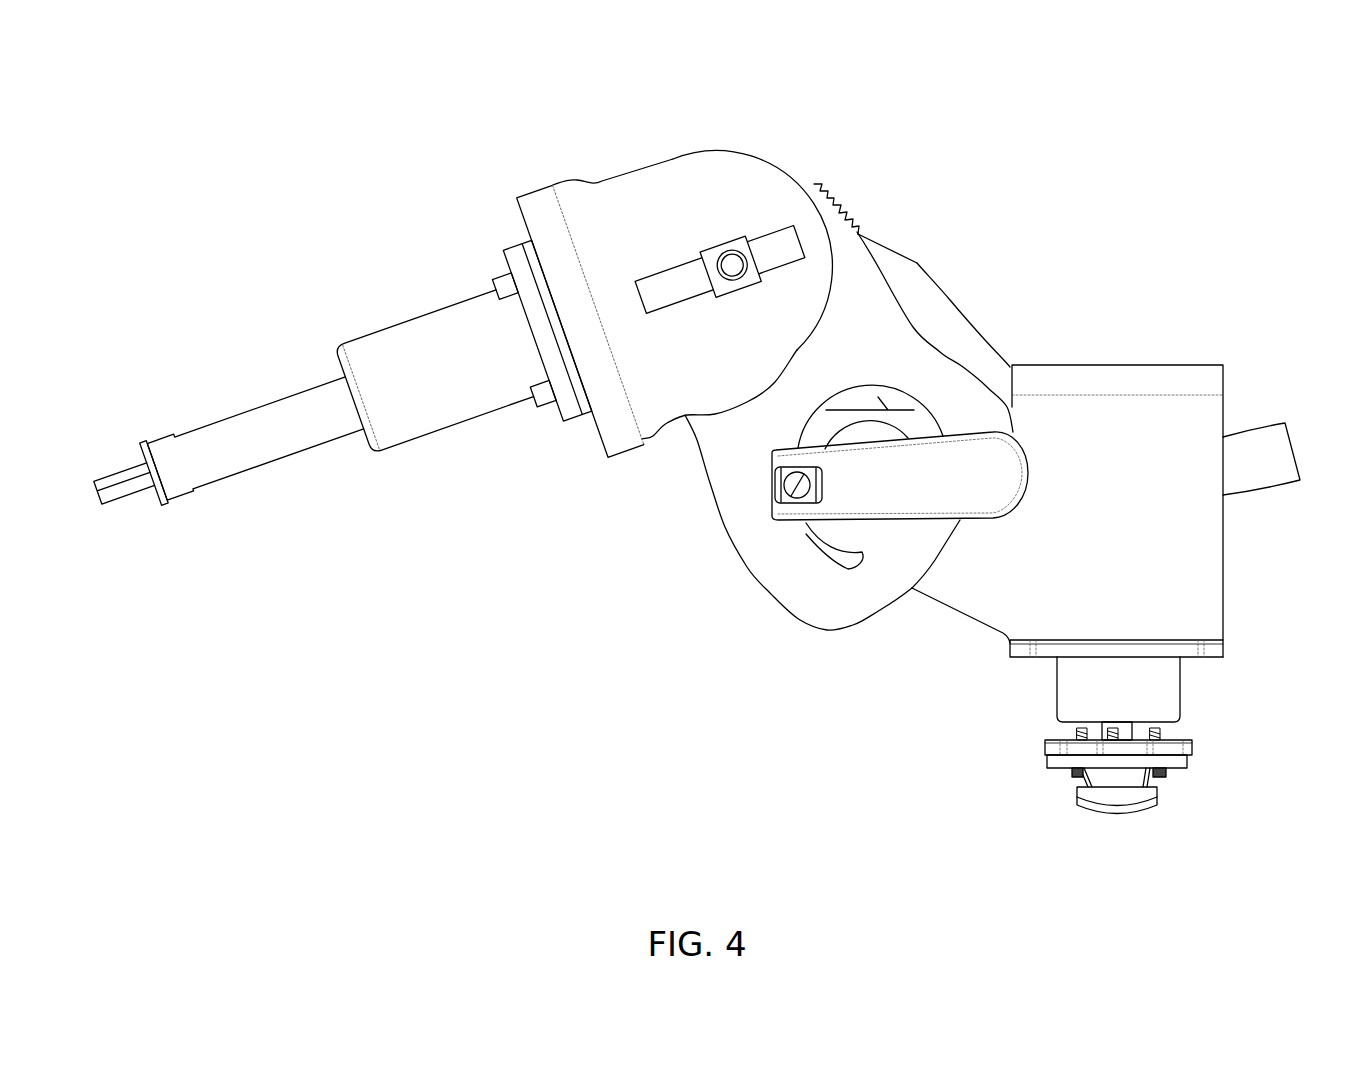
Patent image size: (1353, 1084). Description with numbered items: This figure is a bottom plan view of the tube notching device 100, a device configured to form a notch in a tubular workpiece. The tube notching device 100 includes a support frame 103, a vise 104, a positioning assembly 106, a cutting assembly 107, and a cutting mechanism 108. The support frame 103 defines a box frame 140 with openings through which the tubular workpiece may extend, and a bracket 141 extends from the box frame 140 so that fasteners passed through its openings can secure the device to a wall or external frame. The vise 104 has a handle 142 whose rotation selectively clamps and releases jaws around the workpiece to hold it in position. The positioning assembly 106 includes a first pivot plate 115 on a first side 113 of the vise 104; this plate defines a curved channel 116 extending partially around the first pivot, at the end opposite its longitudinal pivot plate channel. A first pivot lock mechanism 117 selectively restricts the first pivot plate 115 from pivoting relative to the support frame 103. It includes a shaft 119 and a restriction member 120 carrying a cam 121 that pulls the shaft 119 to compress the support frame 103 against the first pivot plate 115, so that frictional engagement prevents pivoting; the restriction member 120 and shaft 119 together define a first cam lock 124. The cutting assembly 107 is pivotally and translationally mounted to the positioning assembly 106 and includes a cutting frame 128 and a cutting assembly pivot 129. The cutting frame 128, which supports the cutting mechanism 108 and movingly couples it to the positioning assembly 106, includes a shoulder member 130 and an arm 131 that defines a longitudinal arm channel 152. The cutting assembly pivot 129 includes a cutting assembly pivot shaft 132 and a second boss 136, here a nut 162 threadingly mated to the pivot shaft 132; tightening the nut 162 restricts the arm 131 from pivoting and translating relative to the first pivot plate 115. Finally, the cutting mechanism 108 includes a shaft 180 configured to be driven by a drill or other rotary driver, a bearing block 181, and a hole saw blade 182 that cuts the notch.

The tube notching device 100 is at (490, 100).
The support frame 103 is at (1180, 326).
The vise 104 is at (1245, 733).
The positioning assembly 106 is at (700, 516).
The cutting assembly 107 is at (738, 127).
The cutting mechanism 108 is at (320, 306).
The first side 113 is at (752, 618).
The first pivot plate 115 is at (837, 612).
The curved channel 116 is at (860, 549).
The first pivot lock mechanism 117 is at (775, 528).
The shaft 119 is at (770, 488).
The restriction member 120 is at (998, 495).
The cam 121 is at (968, 537).
The first cam lock 124 is at (797, 447).
The cutting frame 128 is at (613, 148).
The cutting assembly pivot 129 is at (702, 240).
The shoulder member 130 is at (528, 197).
The arm 131 is at (673, 172).
The cutting assembly pivot shaft 132 is at (735, 278).
The second boss 136 is at (740, 247).
The box frame 140 is at (1237, 405).
The bracket 141 is at (1150, 646).
The handle 142 is at (1125, 795).
The longitudinal arm channel 152 is at (646, 292).
The nut 162 is at (753, 277).
The shaft 180 is at (190, 435).
The bearing block 181 is at (432, 322).
The hole saw blade 182 is at (826, 180).